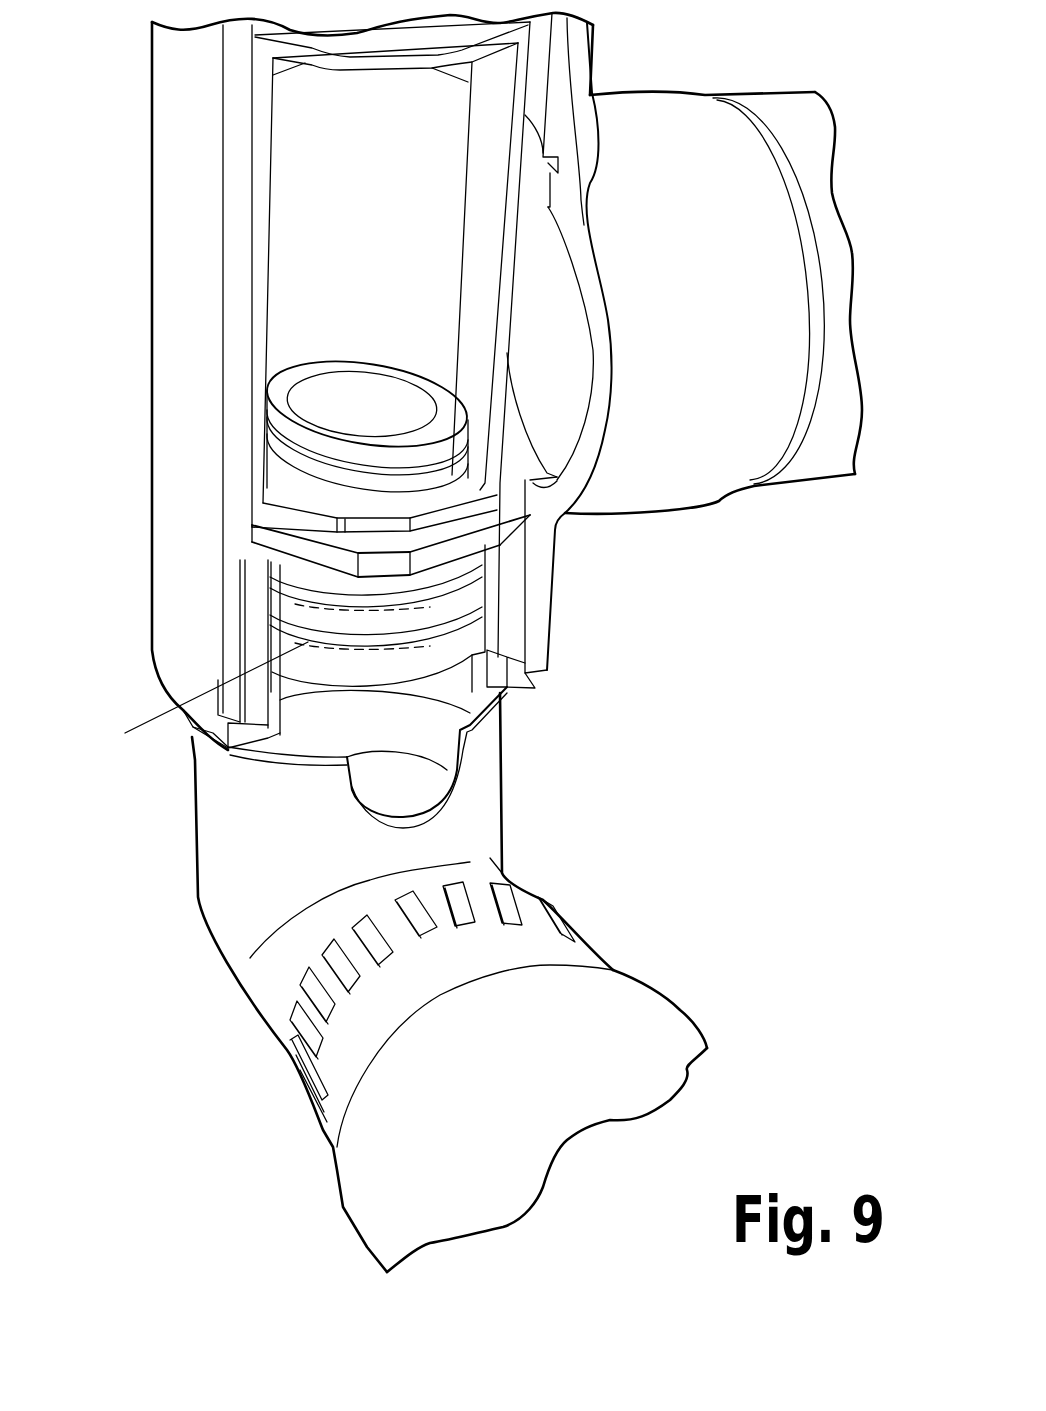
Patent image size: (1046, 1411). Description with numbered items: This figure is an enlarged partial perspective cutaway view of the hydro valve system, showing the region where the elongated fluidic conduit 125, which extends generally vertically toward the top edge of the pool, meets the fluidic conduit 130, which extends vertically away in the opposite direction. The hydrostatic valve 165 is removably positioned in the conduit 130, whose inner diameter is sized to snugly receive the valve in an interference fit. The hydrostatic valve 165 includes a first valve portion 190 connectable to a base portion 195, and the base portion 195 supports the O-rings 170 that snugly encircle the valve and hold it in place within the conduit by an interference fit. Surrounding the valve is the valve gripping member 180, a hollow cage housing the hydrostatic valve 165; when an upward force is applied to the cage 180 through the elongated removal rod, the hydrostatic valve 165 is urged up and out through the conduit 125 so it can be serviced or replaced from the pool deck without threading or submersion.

The fluidic conduit 125 is at (173, 137).
The fluidic conduit 130 is at (195, 743).
The hydrostatic valve 165 is at (242, 551).
The O-rings 170 is at (213, 733).
The valve gripping member 180 is at (260, 283).
The first valve portion 190 is at (302, 445).
The base portion 195 is at (348, 563).